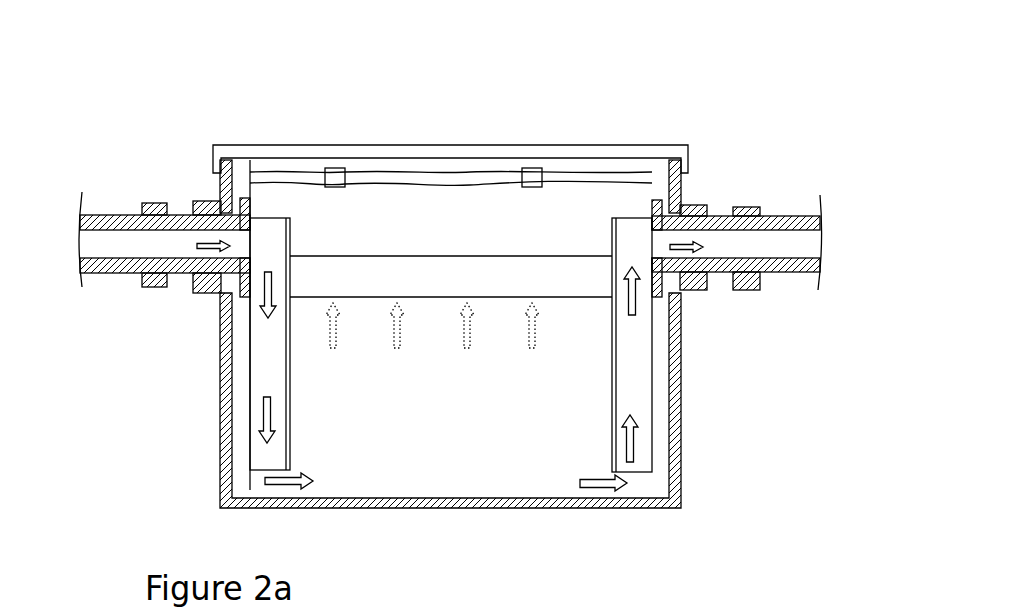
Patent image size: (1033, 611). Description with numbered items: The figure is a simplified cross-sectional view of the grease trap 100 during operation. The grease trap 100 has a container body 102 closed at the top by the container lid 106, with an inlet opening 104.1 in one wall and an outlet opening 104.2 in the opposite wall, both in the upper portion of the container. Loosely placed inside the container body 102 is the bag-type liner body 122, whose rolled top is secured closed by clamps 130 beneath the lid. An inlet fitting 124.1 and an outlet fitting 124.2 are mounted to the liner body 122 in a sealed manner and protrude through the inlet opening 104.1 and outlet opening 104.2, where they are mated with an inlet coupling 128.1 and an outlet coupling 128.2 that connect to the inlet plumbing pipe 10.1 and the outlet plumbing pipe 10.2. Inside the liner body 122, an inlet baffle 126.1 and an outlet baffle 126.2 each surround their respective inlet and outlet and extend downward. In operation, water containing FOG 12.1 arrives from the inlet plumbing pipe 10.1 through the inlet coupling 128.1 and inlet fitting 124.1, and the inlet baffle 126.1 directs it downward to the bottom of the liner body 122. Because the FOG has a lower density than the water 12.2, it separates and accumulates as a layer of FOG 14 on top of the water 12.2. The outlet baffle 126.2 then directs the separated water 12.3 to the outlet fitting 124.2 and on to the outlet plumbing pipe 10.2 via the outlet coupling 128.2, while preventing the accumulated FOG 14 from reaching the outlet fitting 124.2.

The grease trap 100 is at (755, 86).
The container body 102 is at (678, 457).
The container lid 106 is at (327, 147).
The liner body 122 is at (247, 340).
The clamps 130 is at (528, 173).
The accumulated FOG 14 is at (497, 273).
The water containing FOG 12.1 is at (260, 377).
The water 12.2 is at (430, 432).
The separated water 12.3 is at (628, 382).
The inlet plumbing pipe 10.1 is at (112, 278).
The outlet plumbing pipe 10.2 is at (767, 243).
The inlet opening 104.1 is at (170, 190).
The outlet opening 104.2 is at (698, 203).
The inlet fitting 124.1 is at (198, 202).
The outlet fitting 124.2 is at (650, 213).
The inlet baffle 126.1 is at (273, 232).
The outlet baffle 126.2 is at (613, 218).
The inlet coupling 128.1 is at (188, 270).
The outlet coupling 128.2 is at (726, 270).